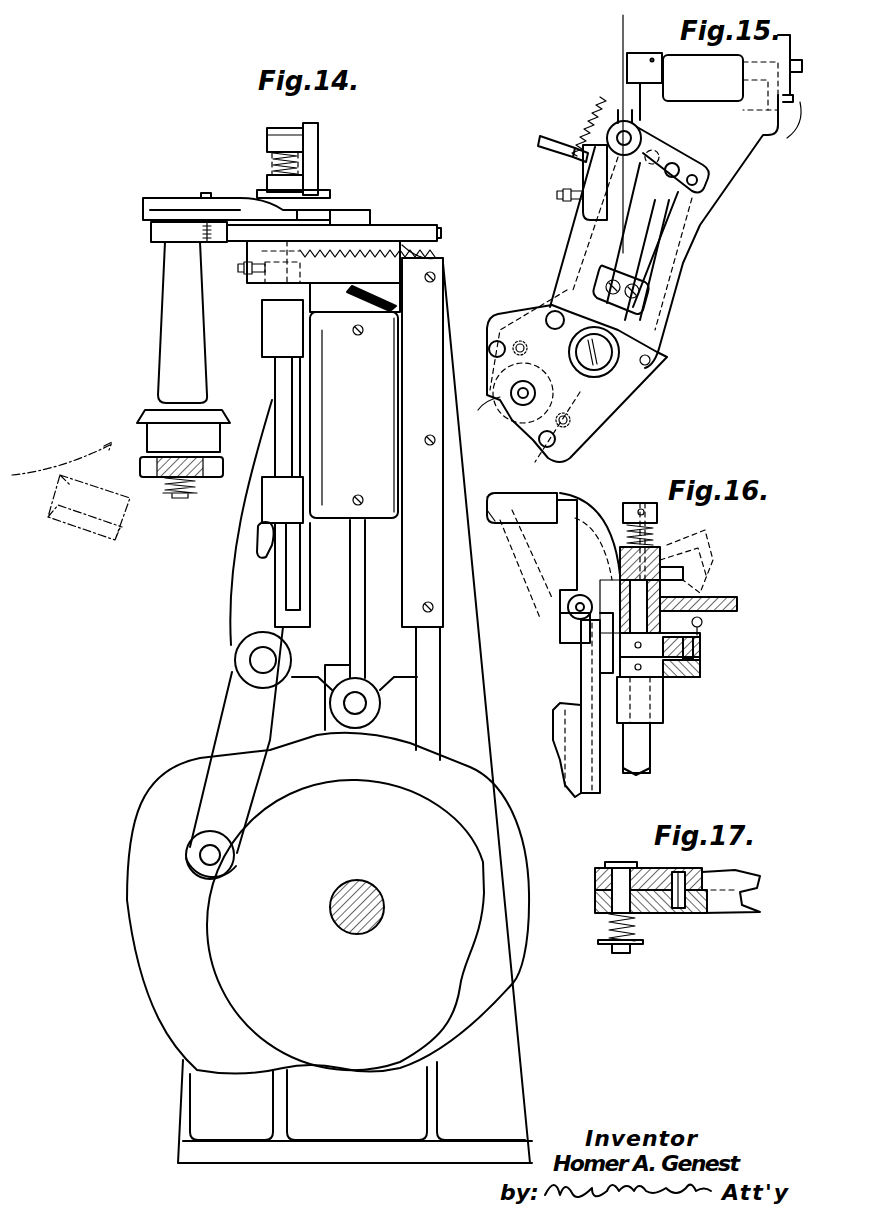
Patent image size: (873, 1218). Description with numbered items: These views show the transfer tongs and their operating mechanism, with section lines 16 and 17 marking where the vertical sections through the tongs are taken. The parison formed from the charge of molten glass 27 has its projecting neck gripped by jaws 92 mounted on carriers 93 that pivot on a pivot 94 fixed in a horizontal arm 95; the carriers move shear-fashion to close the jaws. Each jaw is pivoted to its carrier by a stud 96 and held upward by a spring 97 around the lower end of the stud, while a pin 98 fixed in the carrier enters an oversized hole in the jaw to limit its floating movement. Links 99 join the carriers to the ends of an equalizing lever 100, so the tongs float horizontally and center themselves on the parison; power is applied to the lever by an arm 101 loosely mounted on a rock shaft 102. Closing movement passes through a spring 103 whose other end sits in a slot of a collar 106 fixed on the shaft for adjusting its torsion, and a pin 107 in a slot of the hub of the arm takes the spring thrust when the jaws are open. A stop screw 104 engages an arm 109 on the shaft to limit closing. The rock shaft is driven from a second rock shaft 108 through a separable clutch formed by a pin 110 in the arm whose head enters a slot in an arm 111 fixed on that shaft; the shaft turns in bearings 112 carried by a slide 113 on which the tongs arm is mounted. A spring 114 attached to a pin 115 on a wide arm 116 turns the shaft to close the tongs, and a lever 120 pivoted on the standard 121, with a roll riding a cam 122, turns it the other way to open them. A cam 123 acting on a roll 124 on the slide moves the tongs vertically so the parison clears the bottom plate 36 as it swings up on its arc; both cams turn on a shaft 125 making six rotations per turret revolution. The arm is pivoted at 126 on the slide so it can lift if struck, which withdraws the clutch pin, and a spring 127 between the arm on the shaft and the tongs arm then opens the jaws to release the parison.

In FIG. 15, the section line 16— 16 is at (614, 28).
In FIG. 15, the section line 17— 17 is at (564, 432).
In FIG. 14, the charge of molten glass 27 is at (168, 342).
In FIG. 14, the bottom plate 36 is at (138, 414).
In FIG. 14, the jaws 92 is at (153, 224).
In FIG. 15, the jaws 92 is at (504, 423).
In FIG. 17, the jaws 92 is at (648, 913).
In FIG. 14, the carriers 93 is at (178, 188).
In FIG. 15, the carriers 93 is at (526, 318).
In FIG. 17, the carriers 93 is at (660, 870).
In FIG. 15, the pivot 94 is at (603, 362).
In FIG. 14, the horizontal arm 95 is at (378, 236).
In FIG. 15, the horizontal arm 95 is at (708, 212).
In FIG. 16, the horizontal arm 95 is at (737, 601).
In FIG. 15, the stud 96 is at (492, 347).
In FIG. 17, the stud 96 is at (616, 864).
In FIG. 17, the spring 97 is at (607, 936).
In FIG. 17, the pin 98 is at (715, 872).
In FIG. 15, the links 99 is at (572, 277).
In FIG. 15, the equalizing lever 100 is at (705, 160).
In FIG. 15, the arm 101 is at (648, 144).
In FIG. 16, the arm 101 is at (665, 575).
In FIG. 14, the rock shaft 102 is at (262, 251).
In FIG. 15, the rock shaft 102 is at (623, 130).
In FIG. 16, the rock shaft 102 is at (645, 500).
In FIG. 14, the spring 103 is at (270, 163).
In FIG. 16, the spring 103 is at (658, 530).
In FIG. 14, the stop screw 104 is at (240, 270).
In FIG. 15, the stop screw 104 is at (560, 186).
In FIG. 14, the collar 106 is at (267, 135).
In FIG. 16, the collar 106 is at (628, 502).
In FIG. 16, the pin 107 is at (620, 572).
In FIG. 14, the rock shaft 108 is at (307, 415).
In FIG. 16, the rock shaft 108 is at (644, 752).
In FIG. 14, the arm 109 is at (300, 272).
In FIG. 16, the arm 109 is at (702, 650).
In FIG. 16, the pin 110 is at (693, 636).
In FIG. 14, the arm 111 is at (268, 294).
In FIG. 16, the arm 111 is at (702, 670).
In FIG. 14, the bearings 112 is at (264, 333).
In FIG. 16, the bearings 112 is at (660, 708).
In FIG. 14, the slide 113 is at (296, 441).
In FIG. 16, the slide 113 is at (584, 682).
In FIG. 15, the spring 114 is at (592, 108).
In FIG. 15, the pin 115 is at (540, 141).
In FIG. 14, the wide arm 116 is at (276, 578).
In FIG. 14, the lever 120 is at (236, 617).
In FIG. 14, the standard 121 is at (184, 1083).
In FIG. 16, the standard 121 is at (566, 733).
In FIG. 14, the cam 122 is at (205, 942).
In FIG. 14, the cam 123 is at (130, 873).
In FIG. 14, the roll 124 is at (366, 712).
In FIG. 14, the shaft 125 is at (350, 924).
In FIG. 14, the pivot 126 is at (441, 240).
In FIG. 15, the pivot 126 is at (784, 132).
In FIG. 16, the pivot 126 is at (568, 607).
In FIG. 14, the spring 127 is at (440, 262).
In FIG. 16, the spring 127 is at (700, 620).